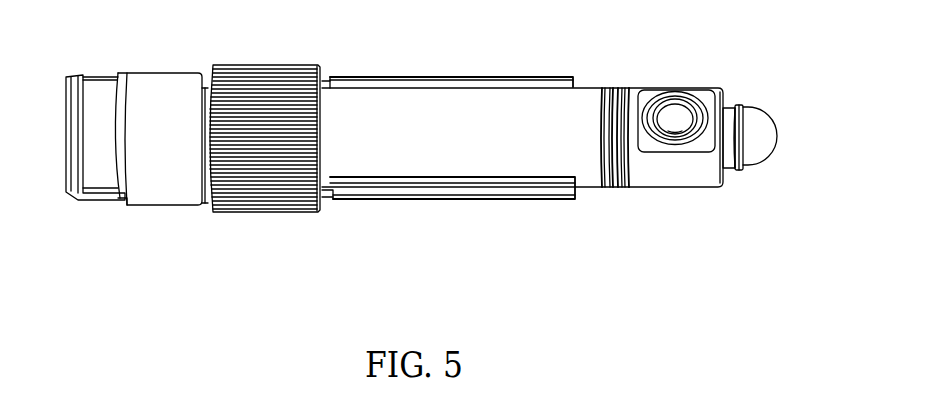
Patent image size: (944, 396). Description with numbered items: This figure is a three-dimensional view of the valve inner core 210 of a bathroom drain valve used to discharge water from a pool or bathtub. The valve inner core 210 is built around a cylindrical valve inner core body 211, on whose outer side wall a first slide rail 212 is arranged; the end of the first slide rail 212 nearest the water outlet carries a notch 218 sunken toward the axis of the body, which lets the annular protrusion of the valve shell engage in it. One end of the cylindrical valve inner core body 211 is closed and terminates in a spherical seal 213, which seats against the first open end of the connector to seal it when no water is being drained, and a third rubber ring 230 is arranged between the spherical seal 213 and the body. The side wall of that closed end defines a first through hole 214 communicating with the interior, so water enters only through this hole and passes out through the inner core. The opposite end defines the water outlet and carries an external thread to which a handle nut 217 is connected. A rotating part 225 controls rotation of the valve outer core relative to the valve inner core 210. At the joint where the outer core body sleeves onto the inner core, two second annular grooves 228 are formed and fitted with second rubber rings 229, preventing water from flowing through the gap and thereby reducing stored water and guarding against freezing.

The valve inner core 210 is at (410, 65).
The cylindrical valve inner core body 211 is at (563, 135).
The first slide rail 212 is at (437, 82).
The spherical seal 213 is at (760, 143).
The first through hole 214 is at (682, 125).
The handle nut 217 is at (93, 118).
The notch 218 is at (325, 78).
The rotating part 225 is at (253, 82).
The second annular grooves 228 is at (622, 184).
The second rubber rings 229 is at (617, 182).
The third rubber ring 230 is at (742, 168).